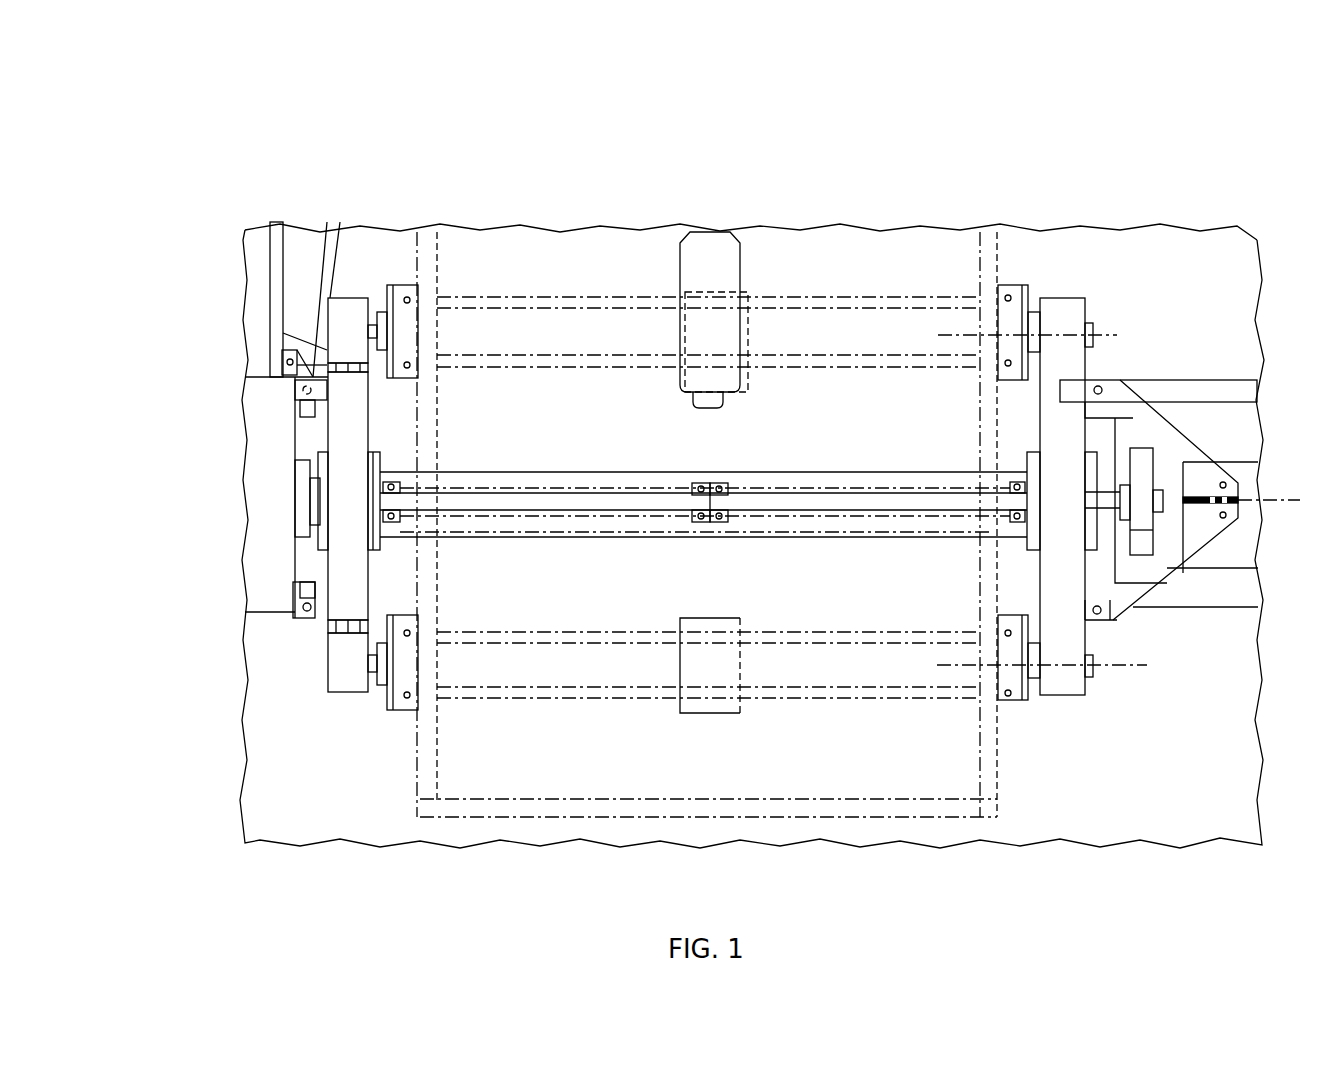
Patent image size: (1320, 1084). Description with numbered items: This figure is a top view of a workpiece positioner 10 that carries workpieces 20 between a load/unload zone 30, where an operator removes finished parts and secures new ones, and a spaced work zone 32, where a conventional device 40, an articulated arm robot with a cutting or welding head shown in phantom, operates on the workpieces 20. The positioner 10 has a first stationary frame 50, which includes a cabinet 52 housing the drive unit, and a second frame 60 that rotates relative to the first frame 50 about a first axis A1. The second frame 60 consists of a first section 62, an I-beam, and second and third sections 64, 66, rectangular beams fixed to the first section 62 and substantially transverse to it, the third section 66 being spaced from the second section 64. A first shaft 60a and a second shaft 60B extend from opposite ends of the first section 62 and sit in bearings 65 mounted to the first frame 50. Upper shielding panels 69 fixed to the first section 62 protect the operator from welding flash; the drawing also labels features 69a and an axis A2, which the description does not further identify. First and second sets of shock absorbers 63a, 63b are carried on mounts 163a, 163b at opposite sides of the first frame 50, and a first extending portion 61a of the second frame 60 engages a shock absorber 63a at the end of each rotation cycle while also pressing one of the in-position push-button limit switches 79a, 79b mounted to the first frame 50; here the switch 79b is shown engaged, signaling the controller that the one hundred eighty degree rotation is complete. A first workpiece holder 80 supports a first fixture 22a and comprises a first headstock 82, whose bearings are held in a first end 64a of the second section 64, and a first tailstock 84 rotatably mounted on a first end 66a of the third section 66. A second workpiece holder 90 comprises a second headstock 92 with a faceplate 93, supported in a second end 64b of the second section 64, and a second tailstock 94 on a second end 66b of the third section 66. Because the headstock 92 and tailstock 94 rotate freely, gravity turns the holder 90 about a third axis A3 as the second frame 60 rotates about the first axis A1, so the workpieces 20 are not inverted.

The workpiece positioner 10 is at (1255, 170).
The workpieces 20 is at (740, 292).
The first fixture 22a is at (930, 635).
The load/unload zone 30 is at (833, 867).
The work zone 32 is at (834, 211).
The conventional device 40 is at (705, 232).
The first stationary frame 50 is at (1200, 520).
The cabinet 52 is at (250, 575).
The second frame 60 is at (355, 445).
The first shaft 60a is at (310, 505).
The second shaft 60B is at (1115, 420).
The first extending portion 61a is at (308, 460).
The first section 62 is at (393, 528).
The first set of shock absorbers 63a is at (303, 385).
The second set of shock absorbers 63b is at (1130, 385).
The second section 64 is at (345, 428).
The first end of second section 64a is at (328, 685).
The second end of second section 64b is at (348, 318).
The bearings 65 is at (298, 490).
The third section 66 is at (1075, 635).
The first end of third section 66a is at (1073, 683).
The second end of third section 66b is at (1070, 330).
The shielding panels 69 is at (663, 508).
The bearing block 69a is at (735, 462).
The first in-position push-button limit switch 79a is at (297, 605).
The second in-position push-button limit switch 79b is at (310, 423).
The first workpiece holder 80 is at (388, 698).
The first headstock 82 is at (410, 665).
The first tailstock 84 is at (1033, 703).
The second workpiece holder 90 is at (387, 283).
The second headstock 92 is at (408, 305).
The faceplate 93 is at (392, 333).
The second tailstock 94 is at (1058, 310).
The mounts 163a is at (287, 612).
The mounts 163b is at (1110, 390).
The first axis A1 is at (1275, 500).
The axis A2 is at (1160, 663).
The third axis A3 is at (1105, 335).